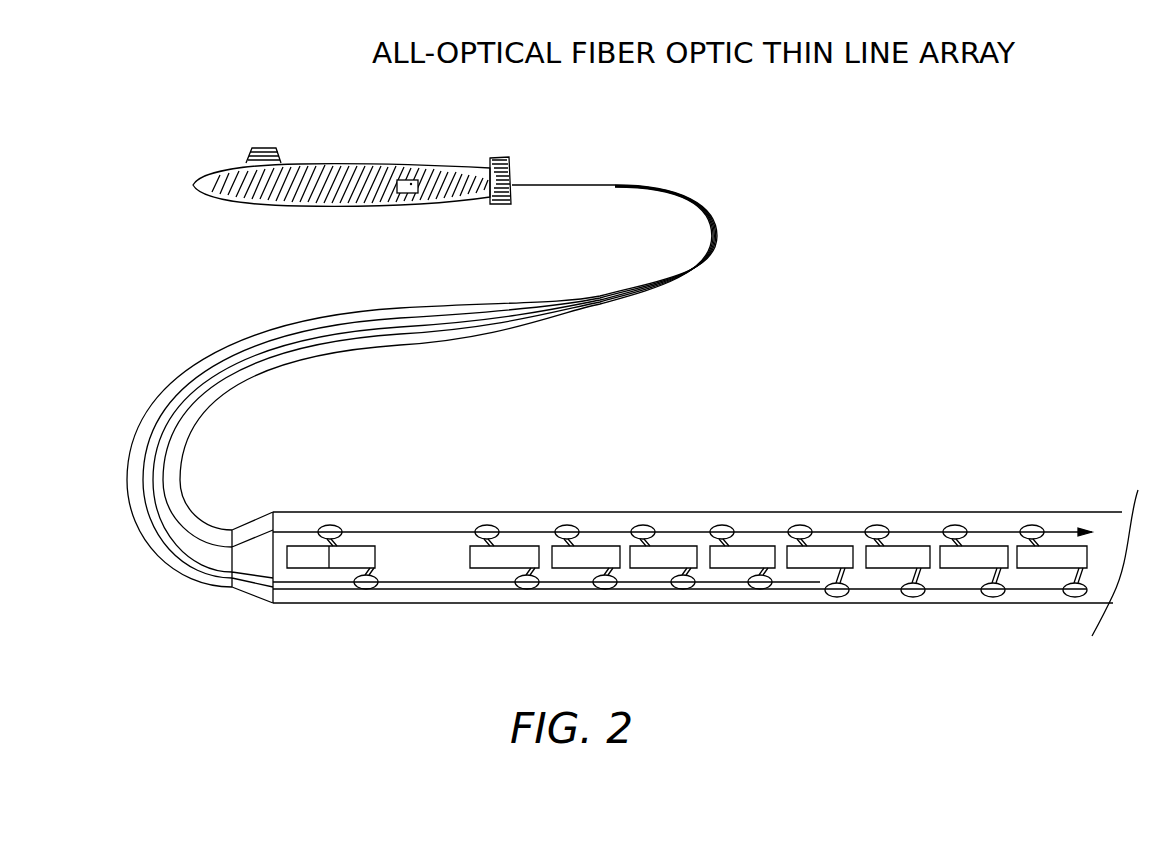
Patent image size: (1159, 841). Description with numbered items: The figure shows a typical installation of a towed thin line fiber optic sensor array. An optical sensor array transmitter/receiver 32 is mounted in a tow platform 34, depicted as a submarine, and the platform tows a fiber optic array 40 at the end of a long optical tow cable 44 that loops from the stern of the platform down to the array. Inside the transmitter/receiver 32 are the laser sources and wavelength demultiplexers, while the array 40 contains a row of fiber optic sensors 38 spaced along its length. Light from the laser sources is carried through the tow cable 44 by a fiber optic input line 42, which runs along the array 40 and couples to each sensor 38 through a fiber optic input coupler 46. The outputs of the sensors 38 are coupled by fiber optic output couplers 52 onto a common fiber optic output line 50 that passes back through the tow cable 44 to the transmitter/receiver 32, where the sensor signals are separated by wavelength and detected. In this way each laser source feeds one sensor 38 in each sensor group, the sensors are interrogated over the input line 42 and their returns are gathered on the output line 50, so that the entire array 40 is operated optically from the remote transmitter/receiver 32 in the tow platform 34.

The optical sensor array transmitter/receiver 32 is at (408, 193).
The tow platform 34 is at (233, 205).
The fiber optic sensor 38 is at (960, 569).
The towed fiber optic array 40 is at (993, 511).
The fiber optic input line 42 is at (258, 530).
The tow cable 44 is at (126, 490).
The fiber optic input coupler 46 is at (722, 525).
The fiber optic output line 50 is at (411, 604).
The fiber optic output coupler 52 is at (527, 590).